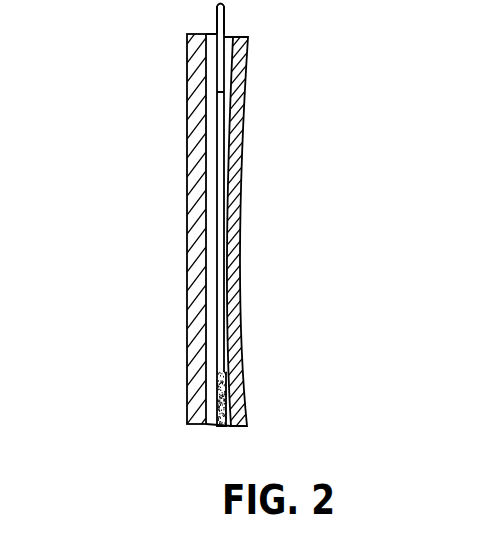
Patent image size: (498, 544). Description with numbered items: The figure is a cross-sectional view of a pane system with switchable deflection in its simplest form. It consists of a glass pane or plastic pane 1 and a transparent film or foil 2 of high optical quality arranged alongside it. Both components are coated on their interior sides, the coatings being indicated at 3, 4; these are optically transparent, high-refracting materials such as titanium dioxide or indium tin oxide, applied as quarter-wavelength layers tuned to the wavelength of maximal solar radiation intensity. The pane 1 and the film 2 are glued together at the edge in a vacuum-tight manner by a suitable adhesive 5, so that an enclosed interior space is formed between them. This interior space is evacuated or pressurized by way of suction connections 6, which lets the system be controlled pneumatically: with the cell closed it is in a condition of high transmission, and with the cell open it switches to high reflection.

The glass pane or plastic pane 1 is at (189, 207).
The transparent film or foil 2 is at (238, 189).
The coating on pane 3 is at (206, 313).
The coating on film 4 is at (218, 265).
The adhesive 5 is at (226, 410).
The suction connections 6 is at (228, 37).